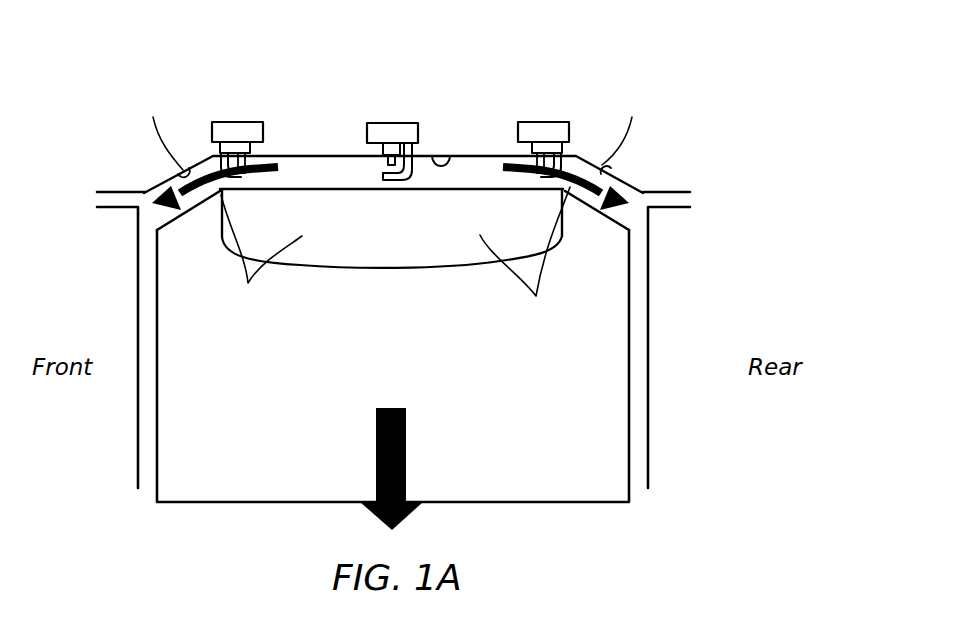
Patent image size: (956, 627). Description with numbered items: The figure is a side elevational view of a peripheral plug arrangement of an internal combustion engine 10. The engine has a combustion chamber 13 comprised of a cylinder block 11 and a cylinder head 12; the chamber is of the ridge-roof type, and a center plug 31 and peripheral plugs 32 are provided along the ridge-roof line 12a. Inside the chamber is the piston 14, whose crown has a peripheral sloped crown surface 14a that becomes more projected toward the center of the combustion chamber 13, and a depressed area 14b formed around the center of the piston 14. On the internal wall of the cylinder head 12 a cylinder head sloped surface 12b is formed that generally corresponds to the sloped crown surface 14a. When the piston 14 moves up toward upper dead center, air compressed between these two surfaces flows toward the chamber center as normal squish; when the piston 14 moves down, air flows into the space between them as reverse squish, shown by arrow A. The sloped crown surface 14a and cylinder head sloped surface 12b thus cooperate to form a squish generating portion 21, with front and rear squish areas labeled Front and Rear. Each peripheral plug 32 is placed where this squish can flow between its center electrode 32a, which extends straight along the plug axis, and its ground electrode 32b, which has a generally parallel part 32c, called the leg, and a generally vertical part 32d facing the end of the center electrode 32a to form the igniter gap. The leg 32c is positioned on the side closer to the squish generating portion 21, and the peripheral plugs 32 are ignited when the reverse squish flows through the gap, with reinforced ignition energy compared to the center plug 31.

The internal combustion engine 10 is at (680, 107).
The cylinder block 11 is at (646, 352).
The cylinder head 12 is at (317, 102).
The ridge-roof line 12a is at (444, 155).
The cylinder head sloped surface 12b is at (185, 168).
The combustion chamber 13 is at (339, 170).
The piston 14 is at (606, 413).
The sloped crown surface 14a is at (162, 226).
The depressed area 14b is at (450, 256).
The squish generating portion 21 is at (147, 193).
The center plug 31 is at (400, 128).
The peripheral plug 32 is at (246, 128).
The center electrode 32a is at (240, 160).
The ground electrode 32b is at (395, 255).
The generally parallel part 32c is at (212, 158).
The generally vertical part 32d is at (243, 177).
The reverse squish A is at (157, 183).